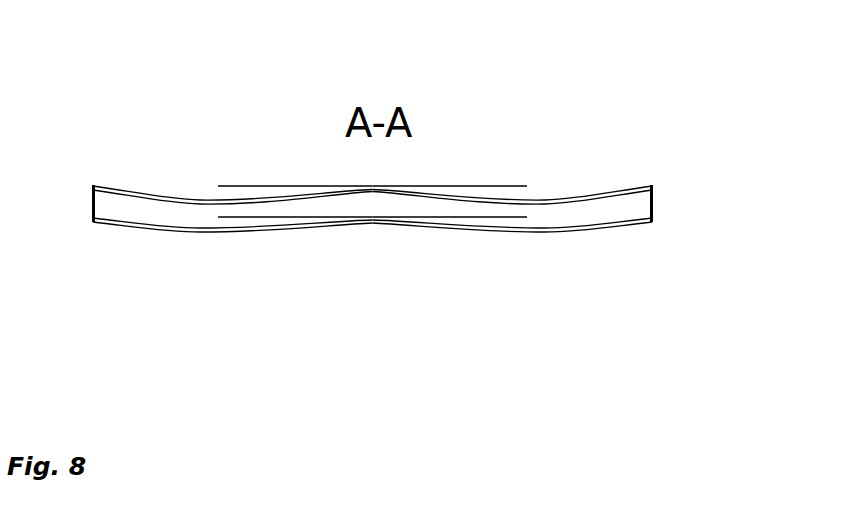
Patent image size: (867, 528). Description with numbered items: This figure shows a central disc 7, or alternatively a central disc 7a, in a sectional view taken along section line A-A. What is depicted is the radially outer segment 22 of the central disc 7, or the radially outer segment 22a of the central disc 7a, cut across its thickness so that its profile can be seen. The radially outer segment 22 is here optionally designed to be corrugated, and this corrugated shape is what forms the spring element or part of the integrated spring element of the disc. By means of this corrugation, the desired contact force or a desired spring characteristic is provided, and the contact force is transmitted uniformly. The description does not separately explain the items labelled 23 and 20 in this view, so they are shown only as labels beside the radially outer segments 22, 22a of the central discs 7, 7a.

The central disc 7 is at (580, 55).
The radially outer segment 22 is at (414, 124).
The lens body 23 is at (414, 124).
The central disc 7a is at (414, 138).
The radially outer segment 22a is at (414, 138).
The plate 20 is at (414, 138).